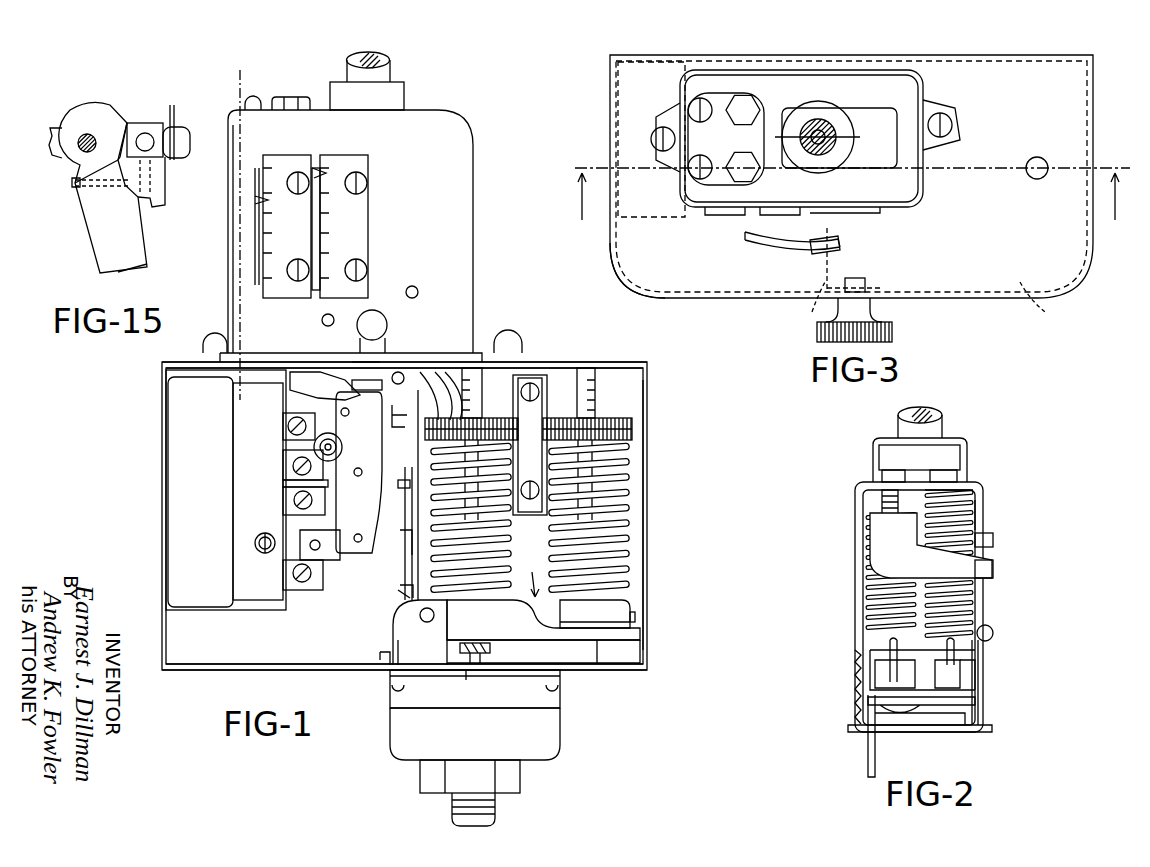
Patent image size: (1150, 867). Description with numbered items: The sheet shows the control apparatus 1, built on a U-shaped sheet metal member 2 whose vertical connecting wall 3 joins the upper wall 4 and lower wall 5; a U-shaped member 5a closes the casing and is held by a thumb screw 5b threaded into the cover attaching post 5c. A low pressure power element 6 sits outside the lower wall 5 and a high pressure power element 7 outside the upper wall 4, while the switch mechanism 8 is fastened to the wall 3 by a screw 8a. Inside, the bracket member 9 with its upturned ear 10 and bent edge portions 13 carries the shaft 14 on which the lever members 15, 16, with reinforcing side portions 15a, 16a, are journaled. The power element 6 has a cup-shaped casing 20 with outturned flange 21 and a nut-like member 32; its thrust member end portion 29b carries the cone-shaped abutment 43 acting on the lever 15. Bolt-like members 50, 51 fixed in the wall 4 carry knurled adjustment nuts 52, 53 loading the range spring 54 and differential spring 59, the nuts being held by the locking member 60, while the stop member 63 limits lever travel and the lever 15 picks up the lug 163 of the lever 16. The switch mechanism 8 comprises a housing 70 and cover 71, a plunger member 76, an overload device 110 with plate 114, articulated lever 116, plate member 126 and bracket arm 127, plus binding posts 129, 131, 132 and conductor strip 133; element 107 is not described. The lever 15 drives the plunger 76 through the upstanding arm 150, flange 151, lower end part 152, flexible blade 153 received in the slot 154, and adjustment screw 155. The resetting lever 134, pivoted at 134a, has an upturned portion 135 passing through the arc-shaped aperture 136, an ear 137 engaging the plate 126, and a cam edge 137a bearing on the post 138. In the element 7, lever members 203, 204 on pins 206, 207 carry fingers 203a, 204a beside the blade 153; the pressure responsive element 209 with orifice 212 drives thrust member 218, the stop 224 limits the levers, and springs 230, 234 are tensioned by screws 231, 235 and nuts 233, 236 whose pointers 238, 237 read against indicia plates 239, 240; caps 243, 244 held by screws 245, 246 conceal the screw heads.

In FIG. 1, the control apparatus 1 is at (663, 444).
In FIG. 3, the control apparatus 1 is at (608, 259).
In FIG. 1, the U-shaped sheet metal member 2 is at (213, 82).
In FIG. 3, the U-shaped sheet metal member 2 is at (1103, 261).
In FIG. 1, the vertical connecting wall 3 is at (643, 500).
In FIG. 1, the upper wall 4 is at (618, 362).
In FIG. 3, the upper wall 4 is at (852, 210).
In FIG. 1, the lower wall 5 is at (630, 665).
In FIG. 3, the U-shaped member 5a is at (1047, 304).
In FIG. 3, the thumb screw 5b is at (892, 322).
In FIG. 3, the cover attaching post 5c is at (806, 303).
In FIG. 1, the low pressure power element 6 is at (571, 741).
In FIG. 1, the high pressure power element 7 is at (483, 138).
In FIG. 3, the high pressure power element 7 is at (936, 164).
In FIG. 1, the switch mechanism 8 is at (175, 484).
In FIG. 3, the switch mechanism 8 is at (622, 129).
In FIG. 1, the screw 8a is at (255, 543).
In FIG. 1, the fulcrum or bracket member 9 is at (384, 633).
In FIG. 1, the upturned ear 10 is at (418, 672).
In FIG. 1, the upwardly bent edge portions 13 is at (427, 622).
In FIG. 1, the shaft or rod member 14 is at (418, 624).
In FIG. 1, the lever member 15 is at (640, 640).
In FIG. 1, the upturned reinforcing side portion 15a is at (502, 631).
In FIG. 1, the lever member 16 is at (530, 573).
In FIG. 1, the upturned reinforcing side portion 16a is at (628, 600).
In FIG. 1, the cup-shaped casing member 20 is at (390, 735).
In FIG. 1, the outturned flange 21 is at (498, 670).
In FIG. 1, the end portion of thrust member 29b is at (490, 648).
In FIG. 1, the nut-like member 32 is at (508, 778).
In FIG. 1, the cone-shaped abutment member 43 is at (470, 670).
In FIG. 1, the bolt-like member 50 is at (505, 344).
In FIG. 1, the bolt-like member 51 is at (595, 382).
In FIG. 3, the bolt-like member 51 is at (1038, 157).
In FIG. 1, the adjustment nut 52 is at (485, 418).
In FIG. 1, the adjustment nut 53 is at (605, 418).
In FIG. 1, the helical coil spring 54 is at (510, 535).
In FIG. 1, the helical coil compression spring 59 is at (628, 538).
In FIG. 1, the U-shaped locking member 60 is at (532, 378).
In FIG. 1, the stop member 63 is at (612, 660).
In FIG. 1, the casing or housing member 70 is at (262, 600).
In FIG. 1, the cover member 71 is at (200, 607).
In FIG. 1, the plunger member 76 is at (390, 412).
In FIG. 15, the plunger member 76 is at (186, 138).
In FIG. 1, the switch blade 107 is at (345, 378).
In FIG. 1, the overload device 110 is at (344, 563).
In FIG. 1, the plate-like member 114 is at (283, 484).
In FIG. 1, the articulated lever member 116 is at (362, 552).
In FIG. 1, the plate-like member 126 is at (370, 440).
In FIG. 15, the plate-like member 126 is at (72, 183).
In FIG. 15, the bracket arm 127 is at (155, 200).
In FIG. 1, the binding post connection 129 is at (283, 570).
In FIG. 1, the binding post 131 is at (283, 462).
In FIG. 1, the binding post member 132 is at (283, 427).
In FIG. 1, the bus bar or conductor strip 133 is at (283, 500).
In FIG. 15, the lever member 134 is at (90, 230).
In FIG. 15, the pivot 134a is at (84, 134).
In FIG. 1, the upturned portion 135 is at (365, 362).
In FIG. 15, the upturned portion 135 is at (145, 268).
In FIG. 3, the upturned portion 135 is at (840, 248).
In FIG. 3, the arc-shaped aperture 136 is at (827, 262).
In FIG. 1, the ear portion 137 is at (428, 372).
In FIG. 15, the ear portion 137 is at (165, 197).
In FIG. 1, the cam edge portion 137a is at (363, 391).
In FIG. 15, the cam edge portion 137a is at (125, 115).
In FIG. 1, the post member 138 is at (400, 372).
In FIG. 15, the post member 138 is at (152, 148).
In FIG. 1, the upstanding arm 150 is at (410, 590).
In FIG. 1, the flange 151 is at (402, 535).
In FIG. 1, the lower end part 152 is at (398, 592).
In FIG. 1, the flexible blade 153 is at (405, 512).
In FIG. 15, the flexible blade 153 is at (176, 110).
In FIG. 15, the converging-diverging slot 154 is at (152, 115).
In FIG. 1, the adjustment screw 155 is at (400, 488).
In FIG. 1, the lug 163 is at (620, 630).
In FIG. 2, the lever member 203 is at (870, 650).
In FIG. 1, the finger 203a is at (445, 372).
In FIG. 2, the lever member 204 is at (975, 700).
In FIG. 2, the finger 204a is at (868, 748).
In FIG. 1, the pin 206 is at (414, 286).
In FIG. 1, the pin 207 is at (378, 312).
In FIG. 2, the pin 207 is at (985, 712).
In FIG. 1, the pressure responsive element 209 is at (420, 93).
In FIG. 3, the pressure responsive element 209 is at (860, 112).
In FIG. 2, the pressure responsive element 209 is at (966, 429).
In FIG. 3, the restricted orifice 212 is at (825, 142).
In FIG. 2, the thrust member 218 is at (875, 496).
In FIG. 1, the stop member 224 is at (330, 326).
In FIG. 2, the stop member 224 is at (978, 680).
In FIG. 2, the helical coil spring 230 is at (968, 505).
In FIG. 2, the adjustment screw 231 is at (958, 462).
In FIG. 2, the screw-threaded nut 233 is at (968, 492).
In FIG. 2, the helical coil spring 234 is at (868, 555).
In FIG. 2, the adjustment screw 235 is at (882, 470).
In FIG. 2, the nut 236 is at (870, 516).
In FIG. 1, the indicator pointer 237 is at (257, 170).
In FIG. 3, the indicator pointer 237 is at (715, 215).
In FIG. 2, the indicator pointer 237 is at (993, 567).
In FIG. 1, the indicator pointer 238 is at (318, 168).
In FIG. 3, the indicator pointer 238 is at (775, 215).
In FIG. 2, the indicator pointer 238 is at (993, 543).
In FIG. 1, the indicia plate 239 is at (283, 298).
In FIG. 3, the indicia plate 239 is at (775, 248).
In FIG. 2, the indicia plate 239 is at (991, 630).
In FIG. 1, the indicia plate 240 is at (365, 255).
In FIG. 3, the indicia plate 240 is at (825, 207).
In FIG. 2, the indicia plate 240 is at (980, 518).
In FIG. 1, the cap or locking member 243 is at (296, 96).
In FIG. 3, the cap or locking member 243 is at (778, 160).
In FIG. 3, the cap or locking member 244 is at (735, 100).
In FIG. 1, the screw 245 is at (255, 104).
In FIG. 3, the screw 245 is at (688, 170).
In FIG. 3, the screw 246 is at (688, 105).